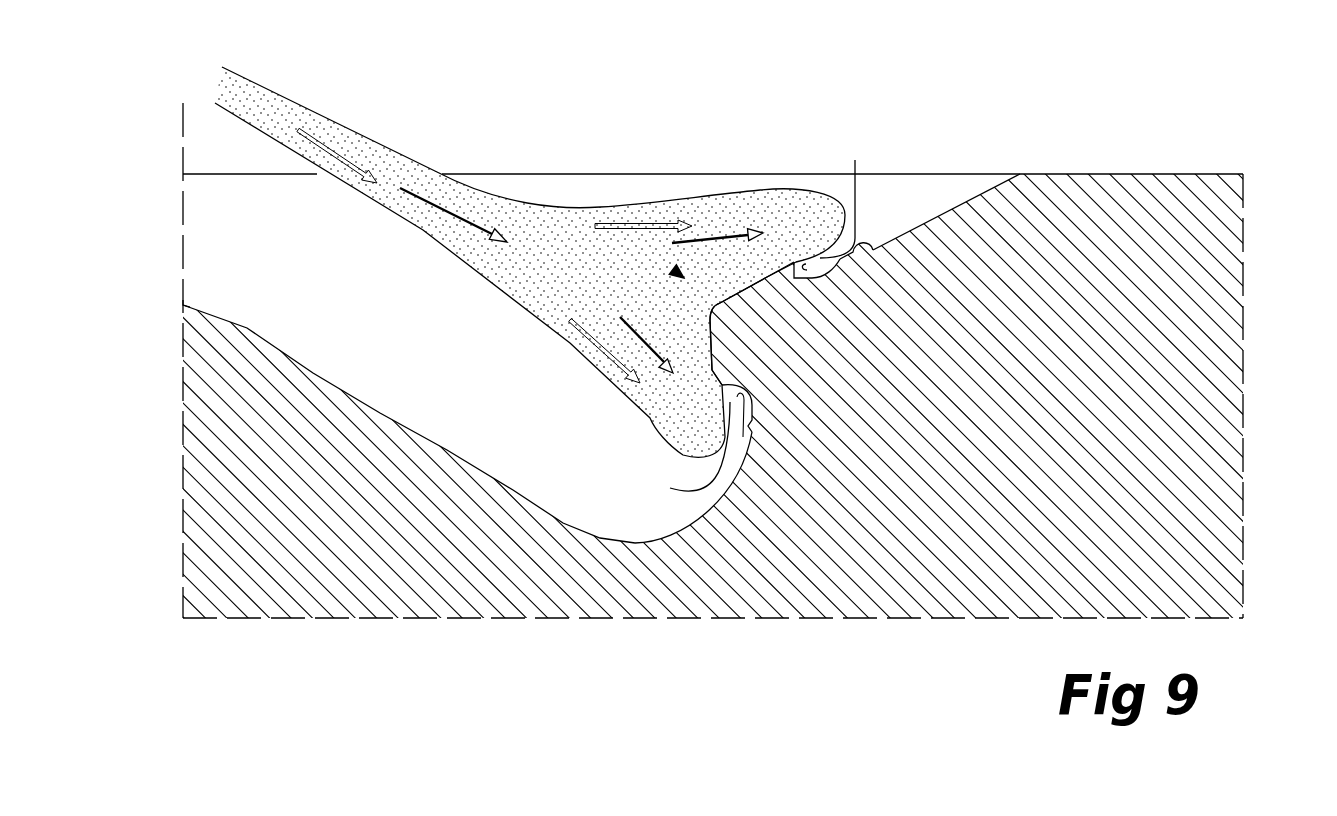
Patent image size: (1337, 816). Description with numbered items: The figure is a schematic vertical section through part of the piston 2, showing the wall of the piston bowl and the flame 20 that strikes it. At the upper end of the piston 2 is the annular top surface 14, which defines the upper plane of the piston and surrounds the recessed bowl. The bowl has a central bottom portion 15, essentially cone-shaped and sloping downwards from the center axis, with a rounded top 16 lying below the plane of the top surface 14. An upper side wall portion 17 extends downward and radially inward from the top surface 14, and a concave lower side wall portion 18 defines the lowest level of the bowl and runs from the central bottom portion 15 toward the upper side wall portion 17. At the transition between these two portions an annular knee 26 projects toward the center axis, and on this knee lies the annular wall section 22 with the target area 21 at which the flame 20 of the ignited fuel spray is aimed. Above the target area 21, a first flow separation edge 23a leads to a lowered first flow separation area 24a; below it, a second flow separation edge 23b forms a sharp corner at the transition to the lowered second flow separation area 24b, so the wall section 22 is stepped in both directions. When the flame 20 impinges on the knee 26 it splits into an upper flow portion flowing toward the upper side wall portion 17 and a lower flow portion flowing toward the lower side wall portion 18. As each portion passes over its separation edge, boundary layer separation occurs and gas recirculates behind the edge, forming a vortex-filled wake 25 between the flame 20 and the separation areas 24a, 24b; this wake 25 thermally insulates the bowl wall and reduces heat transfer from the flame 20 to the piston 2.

The piston 2 is at (1264, 265).
The annular top surface 14 is at (1105, 174).
The central bottom portion 15 is at (347, 390).
The rounded top 16 is at (184, 305).
The upper side wall portion 17 is at (940, 215).
The lower side wall portion 18 is at (634, 542).
The flame 20 is at (422, 228).
The target area 21 is at (711, 312).
The annular wall section 22 is at (673, 270).
The first flow separation edge 23a is at (798, 250).
The second flow separation edge 23b is at (720, 387).
The first flow separation area 24a is at (874, 252).
The second flow separation area 24b is at (750, 428).
The vortex-filled wake 25 is at (751, 316).
The annular knee 26 is at (732, 290).